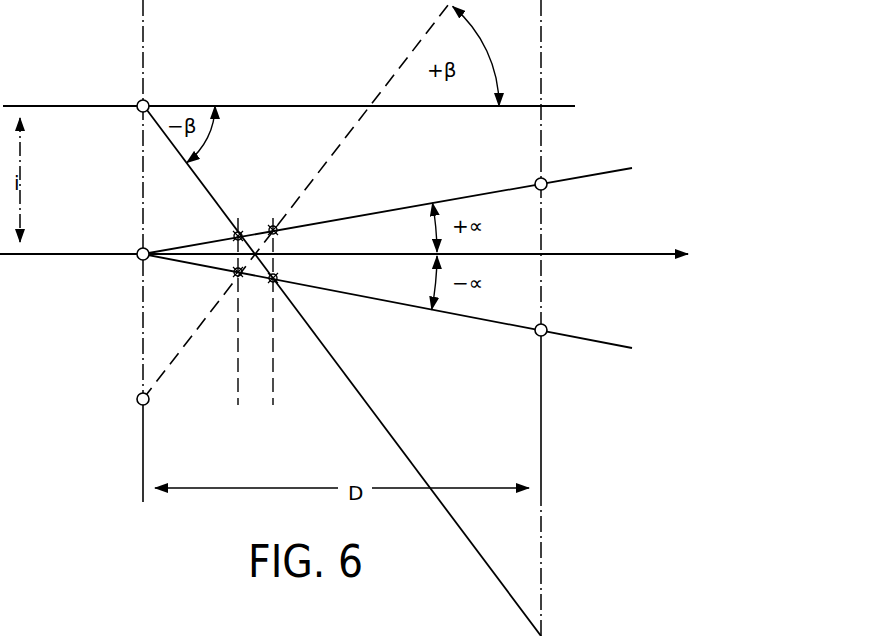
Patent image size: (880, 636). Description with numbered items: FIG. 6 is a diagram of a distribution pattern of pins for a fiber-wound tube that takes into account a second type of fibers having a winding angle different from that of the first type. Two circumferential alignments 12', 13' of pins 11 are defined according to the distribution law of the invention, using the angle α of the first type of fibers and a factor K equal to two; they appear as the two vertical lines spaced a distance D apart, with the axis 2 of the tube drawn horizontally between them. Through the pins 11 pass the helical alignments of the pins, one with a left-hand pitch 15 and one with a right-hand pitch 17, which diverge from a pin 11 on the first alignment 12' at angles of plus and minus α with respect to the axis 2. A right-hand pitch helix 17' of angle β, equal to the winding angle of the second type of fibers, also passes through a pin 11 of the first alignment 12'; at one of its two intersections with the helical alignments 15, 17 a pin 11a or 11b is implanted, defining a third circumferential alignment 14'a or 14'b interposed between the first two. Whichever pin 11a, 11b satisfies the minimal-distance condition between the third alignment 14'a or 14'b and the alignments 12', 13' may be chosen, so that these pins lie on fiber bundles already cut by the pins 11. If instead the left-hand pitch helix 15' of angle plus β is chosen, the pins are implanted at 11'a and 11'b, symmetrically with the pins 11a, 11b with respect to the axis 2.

The axis 2 is at (612, 253).
The pins 11 is at (345, 229).
The pin 11a is at (239, 231).
The pin 11b is at (277, 281).
The pin 11'a is at (197, 288).
The pin 11'b is at (319, 203).
The first circumferential alignment 12' is at (105, 251).
The second circumferential alignment 13' is at (577, 318).
The third circumferential alignment 14'a is at (204, 321).
The third circumferential alignment 14'b is at (301, 321).
The left-hand pitch helical alignment 15 is at (387, 199).
The left-hand pitch helix of angle +β 15' is at (297, 199).
The right-hand pitch helical alignment 17 is at (387, 322).
The right-hand pitch helix of angle β 17' is at (342, 371).